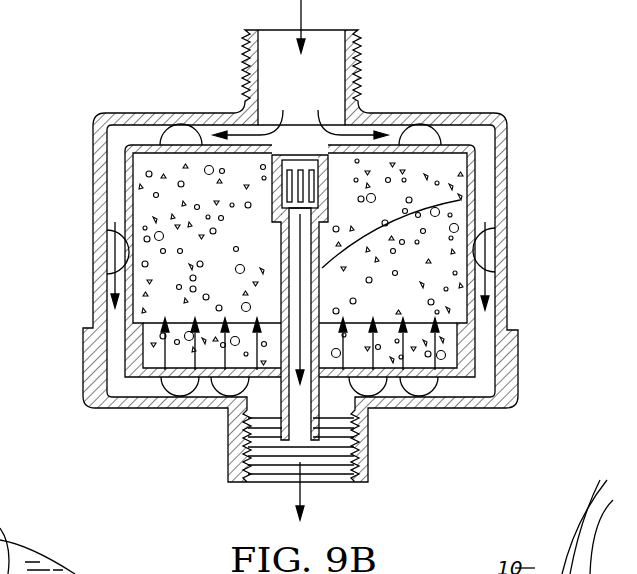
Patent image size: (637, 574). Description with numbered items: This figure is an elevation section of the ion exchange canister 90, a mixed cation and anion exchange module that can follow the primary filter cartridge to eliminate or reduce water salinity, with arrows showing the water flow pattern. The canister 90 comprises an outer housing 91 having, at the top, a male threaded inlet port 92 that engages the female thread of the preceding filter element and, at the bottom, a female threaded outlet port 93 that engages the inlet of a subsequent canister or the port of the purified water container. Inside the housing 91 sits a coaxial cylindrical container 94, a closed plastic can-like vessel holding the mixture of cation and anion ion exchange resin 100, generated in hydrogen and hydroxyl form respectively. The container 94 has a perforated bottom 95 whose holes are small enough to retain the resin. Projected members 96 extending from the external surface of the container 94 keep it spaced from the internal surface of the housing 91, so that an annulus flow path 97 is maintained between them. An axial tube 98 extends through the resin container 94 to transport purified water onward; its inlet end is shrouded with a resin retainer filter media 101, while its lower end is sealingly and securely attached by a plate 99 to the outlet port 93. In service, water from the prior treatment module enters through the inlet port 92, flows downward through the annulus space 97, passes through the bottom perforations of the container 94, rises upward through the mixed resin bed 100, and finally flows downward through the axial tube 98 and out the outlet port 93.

The ion exchange canister 90 is at (497, 90).
The outer housing 91 is at (93, 140).
The male threaded inlet port 92 is at (277, 50).
The female threaded outlet port 93 is at (368, 470).
The cylindrical container 94 is at (480, 147).
The perforated bottom 95 is at (232, 388).
The projected members 96 is at (182, 140).
The annulus flow path 97 is at (487, 350).
The axial tube 98 is at (330, 188).
The plate 99 is at (265, 412).
The ion exchange resin 100 is at (195, 228).
The resin retainer filter media 101 is at (272, 195).